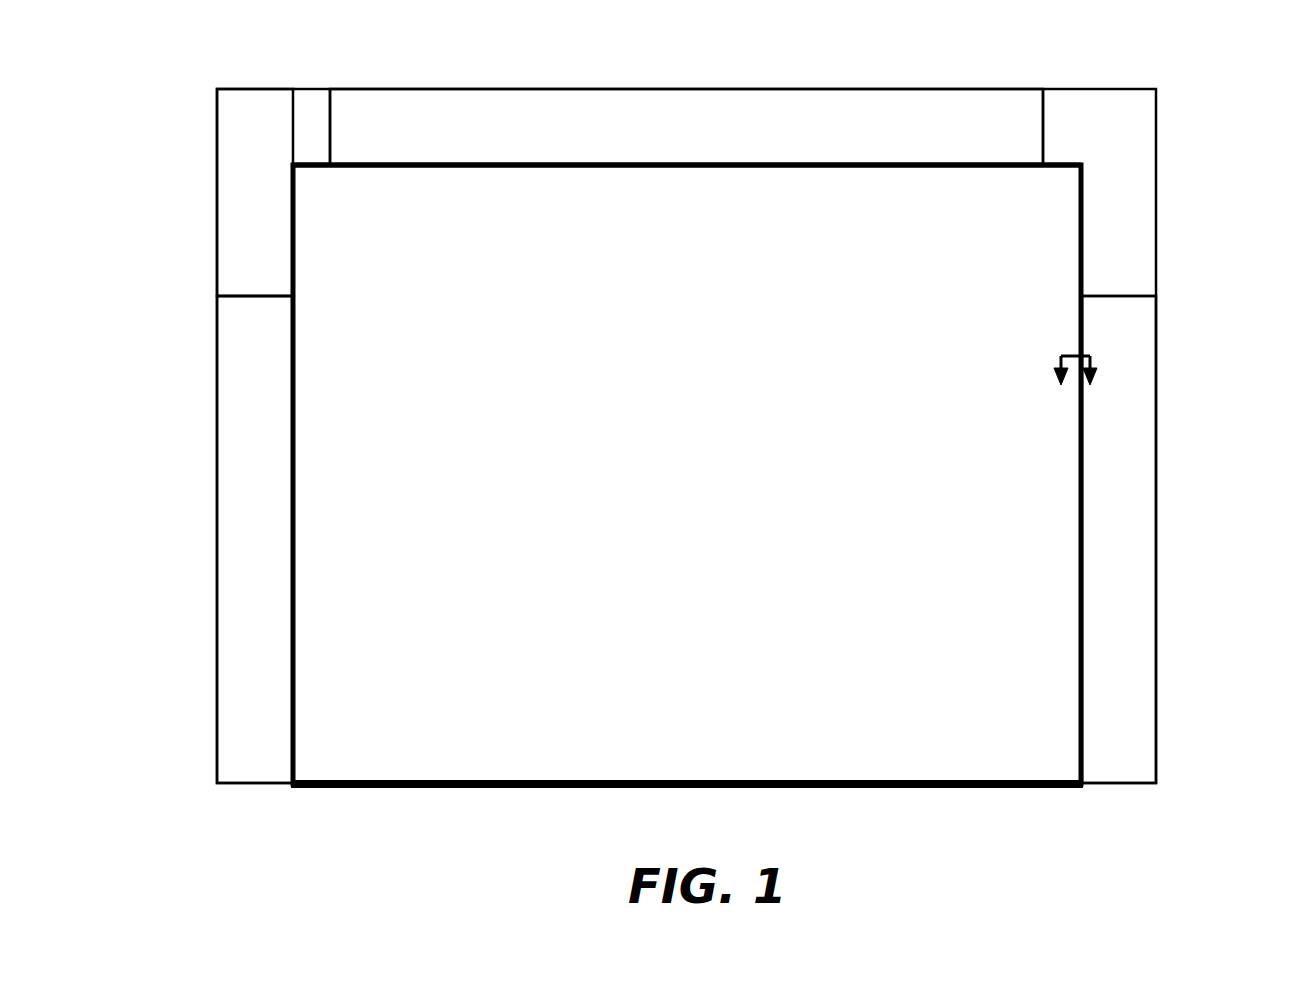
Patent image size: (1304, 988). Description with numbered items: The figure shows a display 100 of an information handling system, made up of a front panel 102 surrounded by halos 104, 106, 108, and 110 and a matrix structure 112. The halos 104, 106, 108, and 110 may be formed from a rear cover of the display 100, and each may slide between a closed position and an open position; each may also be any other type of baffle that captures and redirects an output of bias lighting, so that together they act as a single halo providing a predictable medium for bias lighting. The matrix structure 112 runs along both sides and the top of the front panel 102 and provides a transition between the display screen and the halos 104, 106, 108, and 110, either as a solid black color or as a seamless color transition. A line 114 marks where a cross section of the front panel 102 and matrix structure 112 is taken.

The display 100 is at (1126, 833).
The front panel 102 is at (368, 710).
The halo 104 is at (256, 495).
The halo 106 is at (260, 240).
The halo 108 is at (922, 107).
The halo 110 is at (1112, 428).
The matrix structure 112 is at (725, 163).
The line 114 is at (1083, 354).